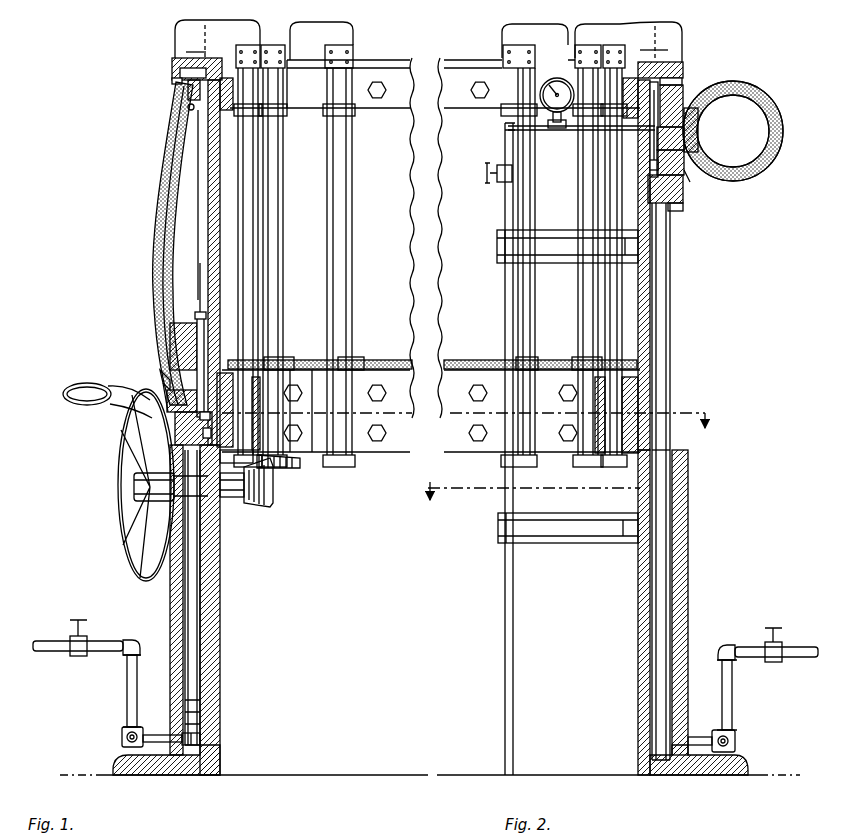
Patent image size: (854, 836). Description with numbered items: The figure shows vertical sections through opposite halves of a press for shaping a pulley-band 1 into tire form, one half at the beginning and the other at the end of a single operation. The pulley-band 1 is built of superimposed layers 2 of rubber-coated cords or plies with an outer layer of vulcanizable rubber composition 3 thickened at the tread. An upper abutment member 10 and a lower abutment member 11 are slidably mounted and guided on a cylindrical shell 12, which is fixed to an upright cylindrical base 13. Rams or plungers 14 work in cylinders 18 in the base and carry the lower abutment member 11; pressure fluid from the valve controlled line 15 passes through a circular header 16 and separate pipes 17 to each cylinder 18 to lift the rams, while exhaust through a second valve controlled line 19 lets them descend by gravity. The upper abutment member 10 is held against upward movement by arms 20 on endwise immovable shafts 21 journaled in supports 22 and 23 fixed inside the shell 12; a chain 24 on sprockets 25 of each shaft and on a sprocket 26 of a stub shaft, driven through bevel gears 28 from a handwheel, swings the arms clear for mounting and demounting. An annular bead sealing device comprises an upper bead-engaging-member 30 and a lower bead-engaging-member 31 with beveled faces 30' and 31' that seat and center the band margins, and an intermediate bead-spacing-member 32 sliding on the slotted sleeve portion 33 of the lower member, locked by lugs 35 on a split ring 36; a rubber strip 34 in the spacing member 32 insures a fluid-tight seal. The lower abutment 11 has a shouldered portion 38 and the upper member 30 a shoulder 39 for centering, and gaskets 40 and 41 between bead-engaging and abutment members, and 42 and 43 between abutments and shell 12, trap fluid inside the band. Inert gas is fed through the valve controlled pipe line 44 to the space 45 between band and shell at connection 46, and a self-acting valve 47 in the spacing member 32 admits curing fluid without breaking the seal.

In FIG. 1, the pulley-band 1 is at (156, 224).
In FIG. 2, the pulley-band 1 is at (780, 152).
In FIG. 1, the superimposed layers 2 is at (177, 213).
In FIG. 2, the superimposed layers 2 is at (756, 160).
In FIG. 1, the outer layer of vulcanizable rubber composition 3 is at (160, 192).
In FIG. 2, the outer layer of vulcanizable rubber composition 3 is at (781, 112).
In FIG. 1, the upper abutment member 10 is at (172, 63).
In FIG. 2, the upper abutment member 10 is at (665, 66).
In FIG. 1, the lower abutment member 11 is at (182, 440).
In FIG. 2, the lower abutment member 11 is at (685, 196).
In FIG. 1, the cylindrical shell 12 is at (220, 246).
In FIG. 2, the cylindrical shell 12 is at (648, 290).
In FIG. 1, the upright cylindrical base 13 is at (222, 683).
In FIG. 2, the upright cylindrical base 13 is at (638, 716).
In FIG. 1, the rams or plungers 14 is at (195, 656).
In FIG. 2, the rams or plungers 14 is at (665, 346).
In FIG. 1, the valve controlled line 15 is at (58, 650).
In FIG. 1, the circular header 16 is at (122, 740).
In FIG. 2, the circular header 16 is at (735, 741).
In FIG. 1, the pipe 17 is at (162, 733).
In FIG. 2, the pipe 17 is at (700, 735).
In FIG. 1, the cylinders 18 is at (200, 740).
In FIG. 2, the cylinders 18 is at (667, 606).
In FIG. 2, the valve controlled line 19 is at (754, 655).
In FIG. 1, the arms 20 is at (183, 28).
In FIG. 2, the arms 20 is at (540, 33).
In FIG. 1, the shafts 21 is at (267, 196).
In FIG. 2, the shafts 21 is at (604, 195).
In FIG. 1, the support 22 is at (395, 108).
In FIG. 2, the support 22 is at (487, 108).
In FIG. 1, the support 23 is at (396, 455).
In FIG. 2, the support 23 is at (494, 452).
In FIG. 1, the chain 24 is at (384, 360).
In FIG. 2, the chain 24 is at (466, 360).
In FIG. 1, the sprockets 25 is at (352, 358).
In FIG. 2, the sprockets 25 is at (576, 360).
In FIG. 1, the sprocket 26 is at (281, 362).
In FIG. 1, the bevel gears 28 is at (267, 486).
In FIG. 1, the upper bead-engaging-member 30 is at (167, 97).
In FIG. 2, the upper bead-engaging-member 30 is at (702, 90).
In FIG. 1, the beveled face 30' is at (163, 123).
In FIG. 1, the lower bead-engaging-member 31 is at (138, 385).
In FIG. 2, the lower bead-engaging-member 31 is at (717, 188).
In FIG. 1, the beveled face 31' is at (143, 360).
In FIG. 1, the intermediate bead-spacing-member 32 is at (164, 328).
In FIG. 2, the intermediate bead-spacing-member 32 is at (690, 150).
In FIG. 1, the cylindrical extension or sleeve portion 33 is at (203, 342).
In FIG. 2, the cylindrical extension or sleeve portion 33 is at (650, 152).
In FIG. 1, the strip or coil of rubber 34 is at (160, 300).
In FIG. 2, the strip or coil of rubber 34 is at (688, 113).
In FIG. 1, the lugs 35 is at (199, 318).
In FIG. 2, the lugs 35 is at (672, 79).
In FIG. 1, the split ring 36 is at (200, 270).
In FIG. 1, the shouldered portion 38 is at (192, 428).
In FIG. 2, the shouldered portion 38 is at (650, 167).
In FIG. 1, the shoulder 39 is at (188, 74).
In FIG. 1, the gasket 40 is at (172, 81).
In FIG. 1, the gasket 41 is at (190, 412).
In FIG. 2, the gasket 41 is at (688, 208).
In FIG. 1, the gasket 42 is at (196, 58).
In FIG. 2, the gasket 42 is at (643, 74).
In FIG. 1, the gasket 43 is at (210, 498).
In FIG. 2, the gasket 43 is at (650, 190).
In FIG. 2, the valve controlled pipe line 44 is at (513, 578).
In FIG. 1, the space 45 is at (198, 167).
In FIG. 2, the space 45 is at (650, 137).
In FIG. 2, the connection 46 is at (562, 76).
In FIG. 2, the valve 47 is at (740, 106).